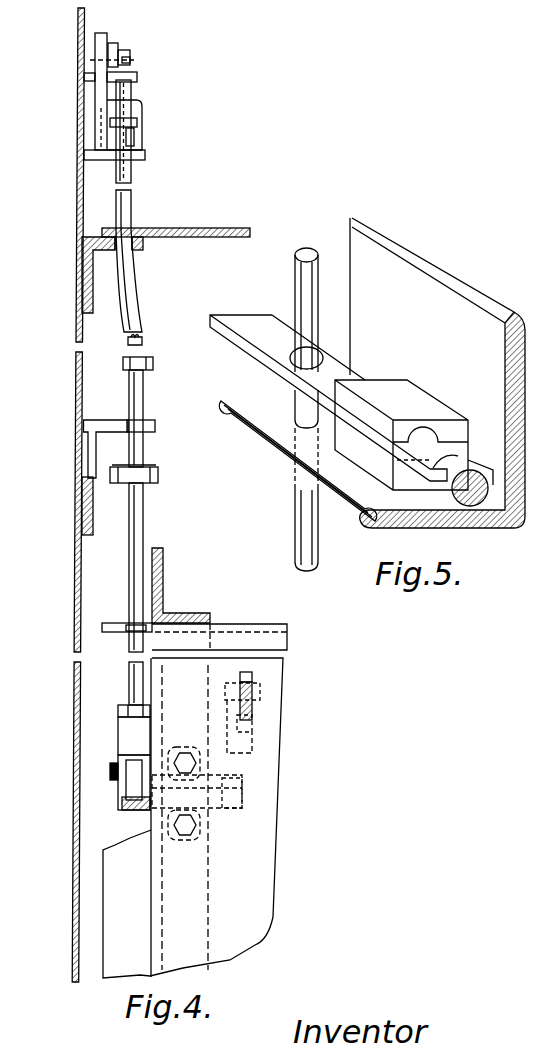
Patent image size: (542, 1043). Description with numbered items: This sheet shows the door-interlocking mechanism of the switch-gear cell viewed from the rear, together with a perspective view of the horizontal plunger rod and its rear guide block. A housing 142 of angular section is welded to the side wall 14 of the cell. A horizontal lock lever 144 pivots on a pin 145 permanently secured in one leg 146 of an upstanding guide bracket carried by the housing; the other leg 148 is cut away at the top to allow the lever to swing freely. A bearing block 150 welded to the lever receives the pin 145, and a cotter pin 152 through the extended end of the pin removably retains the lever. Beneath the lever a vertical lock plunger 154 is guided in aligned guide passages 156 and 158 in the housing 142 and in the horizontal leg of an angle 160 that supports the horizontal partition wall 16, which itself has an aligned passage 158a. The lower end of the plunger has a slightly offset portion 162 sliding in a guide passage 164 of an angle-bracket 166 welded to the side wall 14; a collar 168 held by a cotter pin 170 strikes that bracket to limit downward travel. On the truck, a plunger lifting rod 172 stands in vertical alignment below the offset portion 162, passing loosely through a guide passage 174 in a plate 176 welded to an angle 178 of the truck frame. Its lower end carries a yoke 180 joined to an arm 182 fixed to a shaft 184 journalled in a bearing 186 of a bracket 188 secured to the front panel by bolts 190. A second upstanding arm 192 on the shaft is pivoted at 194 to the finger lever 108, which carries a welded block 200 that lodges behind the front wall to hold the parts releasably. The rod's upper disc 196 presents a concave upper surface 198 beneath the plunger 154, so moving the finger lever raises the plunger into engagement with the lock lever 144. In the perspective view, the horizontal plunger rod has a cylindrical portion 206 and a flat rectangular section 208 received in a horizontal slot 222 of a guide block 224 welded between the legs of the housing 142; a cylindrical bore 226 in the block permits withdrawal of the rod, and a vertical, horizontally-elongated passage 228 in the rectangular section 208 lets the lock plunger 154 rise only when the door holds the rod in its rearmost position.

In FIG. 4, the side wall 14 is at (78, 177).
In FIG. 4, the horizontal partition wall 16 is at (197, 230).
In FIG. 4, the finger lever 108 is at (253, 683).
In FIG. 4, the housing 142 is at (93, 130).
In FIG. 5, the housing 142 is at (418, 278).
In FIG. 4, the lock lever 144 is at (137, 73).
In FIG. 4, the pin 145 is at (130, 61).
In FIG. 4, the leg of guide bracket 146 is at (84, 77).
In FIG. 4, the other leg of guide bracket 148 is at (142, 102).
In FIG. 4, the bearing block 150 is at (113, 50).
In FIG. 4, the cotter pin 152 is at (125, 57).
In FIG. 4, the lock plunger 154 is at (137, 302).
In FIG. 5, the lock plunger 154 is at (299, 532).
In FIG. 4, the guide passage 156 is at (145, 155).
In FIG. 5, the guide passage 156 is at (294, 423).
In FIG. 4, the guide passage 158 is at (135, 249).
In FIG. 4, the passage 158a is at (128, 230).
In FIG. 4, the angle 160 is at (82, 292).
In FIG. 4, the offset portion 162 is at (143, 390).
In FIG. 4, the guide passage 164 is at (147, 420).
In FIG. 4, the angle-bracket 166 is at (87, 432).
In FIG. 4, the collar 168 is at (153, 362).
In FIG. 4, the cotter pin 170 is at (141, 342).
In FIG. 4, the plunger lifting rod 172 is at (143, 535).
In FIG. 4, the guide passage 174 is at (128, 627).
In FIG. 4, the plate 176 is at (100, 627).
In FIG. 4, the angle 178 is at (167, 610).
In FIG. 4, the yoke 180 is at (120, 729).
In FIG. 4, the arm 182 is at (132, 782).
In FIG. 4, the shaft 184 is at (217, 810).
In FIG. 4, the bearing 186 is at (212, 777).
In FIG. 4, the bracket 188 is at (185, 748).
In FIG. 4, the bolts 190 is at (190, 757).
In FIG. 4, the second upstanding arm 192 is at (240, 753).
In FIG. 4, the pivot 194 is at (260, 697).
In FIG. 4, the disc 196 is at (157, 485).
In FIG. 4, the concave upper surface 198 is at (147, 467).
In FIG. 4, the block 200 is at (252, 728).
In FIG. 4, the cylindrical portion 206 is at (134, 138).
In FIG. 5, the cylindrical portion 206 is at (451, 497).
In FIG. 4, the flat rectangular section 208 is at (137, 124).
In FIG. 5, the flat rectangular section 208 is at (272, 360).
In FIG. 5, the horizontal slot 222 is at (447, 440).
In FIG. 5, the guide block 224 is at (410, 390).
In FIG. 5, the cylindrical bore 226 is at (424, 430).
In FIG. 5, the passage 228 is at (322, 358).